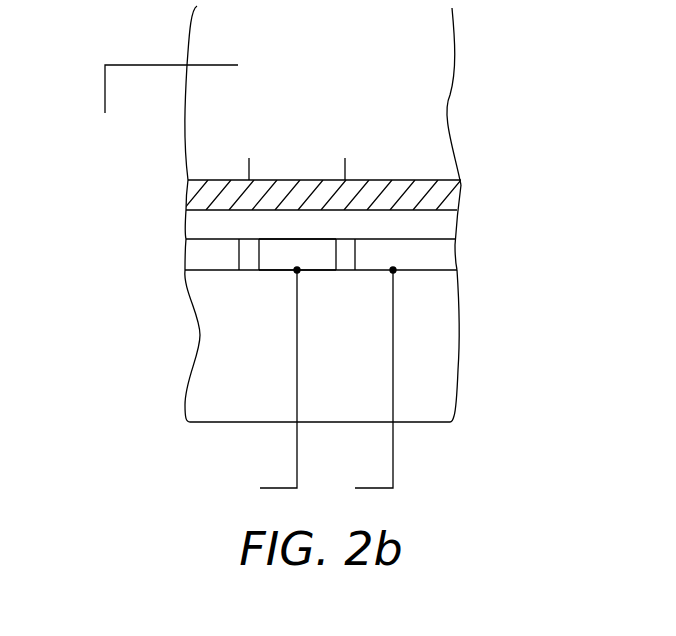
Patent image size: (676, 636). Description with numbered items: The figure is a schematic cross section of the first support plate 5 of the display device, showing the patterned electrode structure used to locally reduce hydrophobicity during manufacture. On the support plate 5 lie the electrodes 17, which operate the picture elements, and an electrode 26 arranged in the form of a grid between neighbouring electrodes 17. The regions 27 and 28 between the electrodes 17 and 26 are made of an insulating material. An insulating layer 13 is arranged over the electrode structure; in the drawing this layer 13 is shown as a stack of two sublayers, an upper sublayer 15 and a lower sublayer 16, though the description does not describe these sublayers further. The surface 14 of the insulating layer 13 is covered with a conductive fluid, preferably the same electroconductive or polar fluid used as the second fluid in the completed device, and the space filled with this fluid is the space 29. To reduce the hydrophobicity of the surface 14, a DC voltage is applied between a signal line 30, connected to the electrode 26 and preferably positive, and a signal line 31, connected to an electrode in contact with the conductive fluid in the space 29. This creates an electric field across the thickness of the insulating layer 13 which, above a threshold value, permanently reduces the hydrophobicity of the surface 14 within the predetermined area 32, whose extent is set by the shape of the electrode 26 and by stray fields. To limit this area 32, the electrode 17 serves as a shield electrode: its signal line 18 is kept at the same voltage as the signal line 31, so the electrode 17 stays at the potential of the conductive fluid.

The first support plate 5 is at (448, 346).
The insulating layer 13 is at (365, 212).
The surface 14 is at (370, 180).
The upper electrode layer 15 is at (448, 191).
The piezoelectric layer 16 is at (450, 221).
The electrode 17 is at (450, 251).
The signal line 18 is at (375, 487).
The electrode 26 is at (278, 262).
The region 27 is at (249, 262).
The region 28 is at (347, 262).
The space 29 is at (334, 85).
The signal line 30 is at (280, 487).
The signal line 31 is at (104, 88).
The area 32 is at (309, 180).